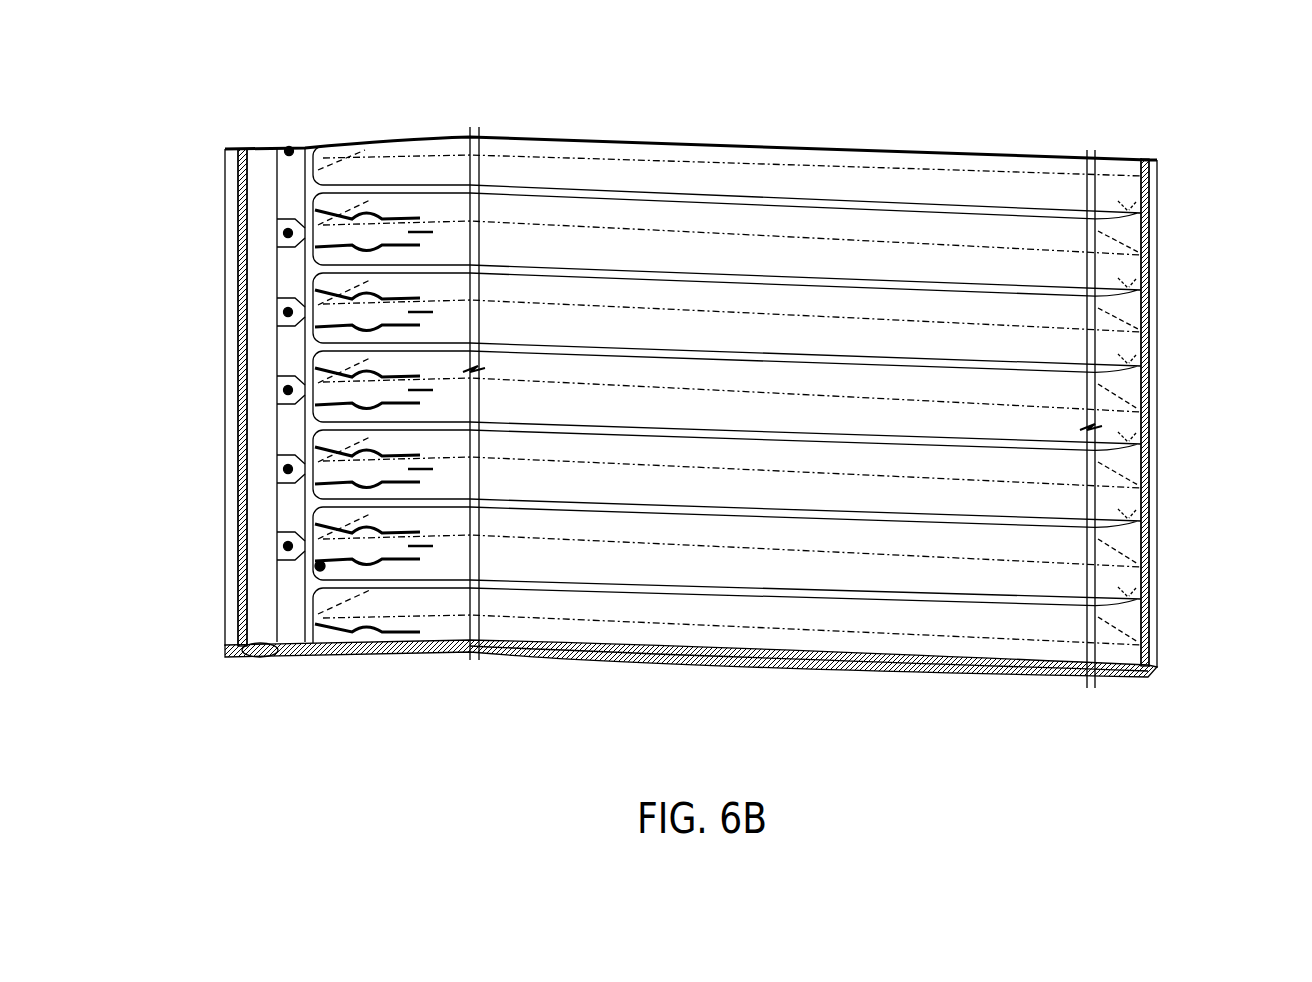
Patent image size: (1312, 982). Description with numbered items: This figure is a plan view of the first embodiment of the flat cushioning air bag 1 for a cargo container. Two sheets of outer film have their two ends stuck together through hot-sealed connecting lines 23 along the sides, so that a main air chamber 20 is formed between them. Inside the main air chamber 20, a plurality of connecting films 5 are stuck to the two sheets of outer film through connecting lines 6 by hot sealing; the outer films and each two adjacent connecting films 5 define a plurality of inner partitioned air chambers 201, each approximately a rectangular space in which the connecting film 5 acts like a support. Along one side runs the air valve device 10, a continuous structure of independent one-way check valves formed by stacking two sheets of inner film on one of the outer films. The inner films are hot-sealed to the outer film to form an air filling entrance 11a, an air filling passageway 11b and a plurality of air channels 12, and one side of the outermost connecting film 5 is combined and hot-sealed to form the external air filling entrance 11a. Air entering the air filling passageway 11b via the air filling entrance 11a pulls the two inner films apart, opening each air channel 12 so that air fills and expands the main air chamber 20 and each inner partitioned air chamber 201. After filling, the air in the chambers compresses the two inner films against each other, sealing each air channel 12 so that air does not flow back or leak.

The flat cushioning air bag 1 is at (1285, 91).
The main air chamber 20 is at (922, 113).
The inner partitioned air chamber 201 is at (745, 245).
The connecting line 23 is at (243, 462).
The air filling passageway 11b is at (262, 349).
The air filling entrance 11a is at (268, 652).
The air valve device 10 is at (320, 566).
The air channel 12 is at (397, 548).
The connecting line 6 is at (817, 597).
The connecting film 5 is at (907, 633).